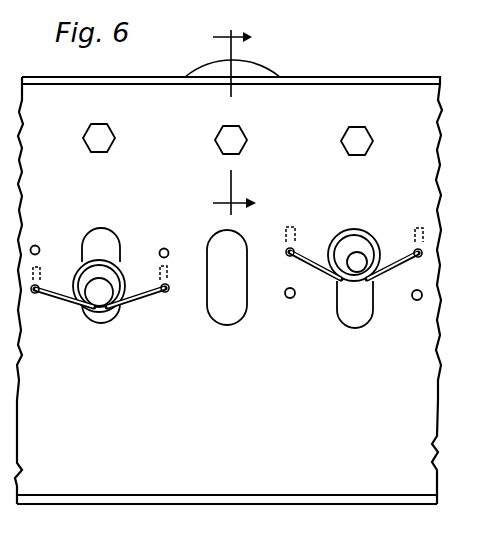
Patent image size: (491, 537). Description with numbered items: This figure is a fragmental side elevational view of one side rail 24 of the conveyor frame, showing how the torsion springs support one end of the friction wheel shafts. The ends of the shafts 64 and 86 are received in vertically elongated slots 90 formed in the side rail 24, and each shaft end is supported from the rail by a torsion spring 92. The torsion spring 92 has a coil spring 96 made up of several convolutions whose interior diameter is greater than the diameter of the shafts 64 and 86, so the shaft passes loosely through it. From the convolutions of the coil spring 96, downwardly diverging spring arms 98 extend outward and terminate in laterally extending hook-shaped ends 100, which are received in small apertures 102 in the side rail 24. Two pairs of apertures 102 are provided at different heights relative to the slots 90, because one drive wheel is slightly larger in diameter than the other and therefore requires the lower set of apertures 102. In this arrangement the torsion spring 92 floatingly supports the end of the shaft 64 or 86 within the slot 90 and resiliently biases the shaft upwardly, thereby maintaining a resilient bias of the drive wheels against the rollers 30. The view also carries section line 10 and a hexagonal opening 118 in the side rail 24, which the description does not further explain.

The section line 10- 10 is at (251, 122).
The side rail 24 is at (223, 454).
The rollers 30 is at (207, 79).
The shaft 64 is at (93, 296).
The shaft 86 is at (359, 259).
The vertically elongated slot 90 is at (238, 312).
The torsion spring 92 is at (108, 303).
The coil spring 96 is at (350, 230).
The spring arms 98 is at (393, 272).
The hook-shaped ends 100 is at (422, 238).
The apertures 102 is at (163, 247).
The hexagonal hole 118 is at (246, 133).